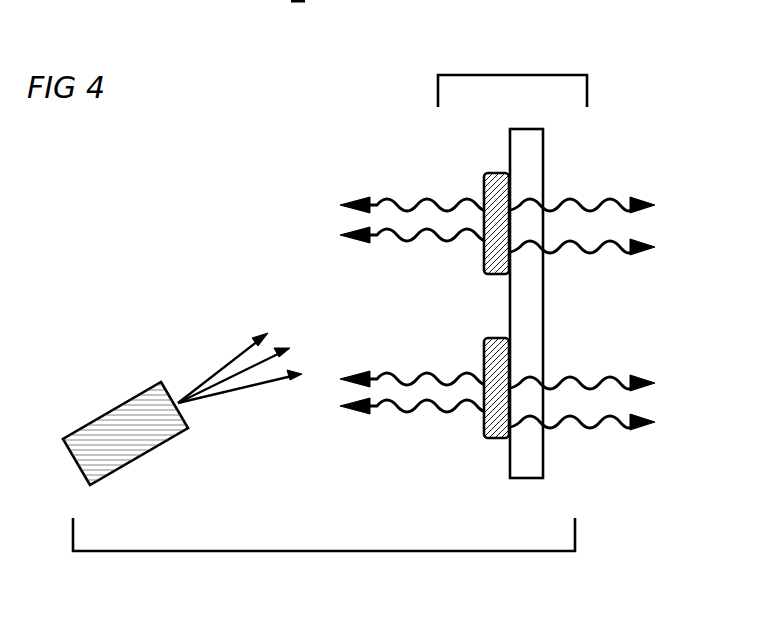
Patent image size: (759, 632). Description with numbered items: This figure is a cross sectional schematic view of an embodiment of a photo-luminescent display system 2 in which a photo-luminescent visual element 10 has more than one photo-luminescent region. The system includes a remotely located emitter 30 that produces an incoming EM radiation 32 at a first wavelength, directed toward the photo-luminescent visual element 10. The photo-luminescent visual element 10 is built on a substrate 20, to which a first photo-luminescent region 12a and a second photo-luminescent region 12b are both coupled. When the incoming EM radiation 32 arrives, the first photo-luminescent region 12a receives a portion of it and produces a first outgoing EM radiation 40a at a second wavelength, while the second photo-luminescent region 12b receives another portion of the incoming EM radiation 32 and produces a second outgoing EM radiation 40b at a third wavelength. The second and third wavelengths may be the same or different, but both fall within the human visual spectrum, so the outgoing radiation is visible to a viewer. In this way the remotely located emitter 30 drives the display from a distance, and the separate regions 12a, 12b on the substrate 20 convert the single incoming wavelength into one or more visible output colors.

The photo-luminescent display system 2 is at (325, 552).
The photo-luminescent visual element 10 is at (513, 74).
The first photo-luminescent region 12a is at (497, 173).
The second photo-luminescent region 12b is at (497, 438).
The substrate 20 is at (526, 478).
The remotely located emitter 30 is at (130, 402).
The incoming EM radiation 32 is at (218, 394).
The first outgoing EM radiation 40a is at (467, 198).
The second outgoing EM radiation 40b is at (467, 376).